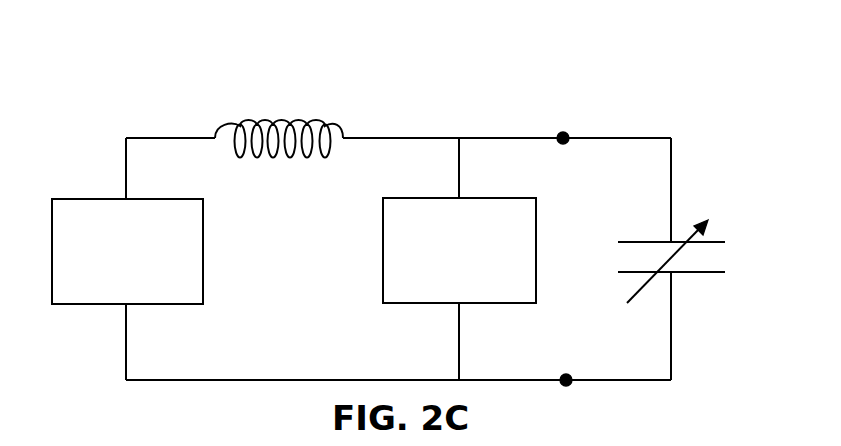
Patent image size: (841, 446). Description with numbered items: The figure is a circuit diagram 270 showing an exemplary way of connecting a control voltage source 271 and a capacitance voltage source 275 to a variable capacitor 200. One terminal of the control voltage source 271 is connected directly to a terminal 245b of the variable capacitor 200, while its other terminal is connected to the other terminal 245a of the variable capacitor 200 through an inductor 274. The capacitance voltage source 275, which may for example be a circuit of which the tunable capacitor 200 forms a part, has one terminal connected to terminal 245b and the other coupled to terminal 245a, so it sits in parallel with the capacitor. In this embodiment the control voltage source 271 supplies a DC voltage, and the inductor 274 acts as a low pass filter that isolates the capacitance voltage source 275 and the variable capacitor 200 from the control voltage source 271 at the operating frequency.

The circuit diagram 270 is at (388, 93).
The inductor 274 is at (302, 158).
The control voltage source 271 is at (127, 251).
The capacitance voltage source 275 is at (459, 250).
The terminal 245a is at (563, 126).
The terminal 245b is at (567, 391).
The variable capacitor 200 is at (675, 253).